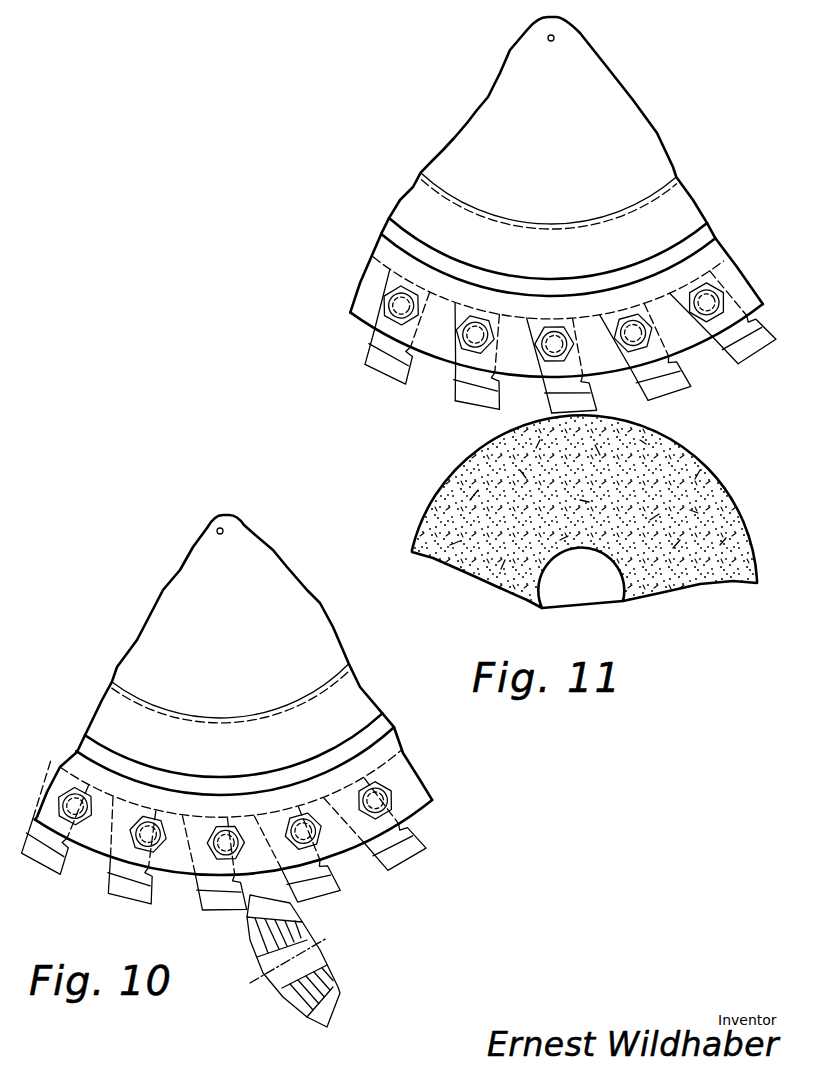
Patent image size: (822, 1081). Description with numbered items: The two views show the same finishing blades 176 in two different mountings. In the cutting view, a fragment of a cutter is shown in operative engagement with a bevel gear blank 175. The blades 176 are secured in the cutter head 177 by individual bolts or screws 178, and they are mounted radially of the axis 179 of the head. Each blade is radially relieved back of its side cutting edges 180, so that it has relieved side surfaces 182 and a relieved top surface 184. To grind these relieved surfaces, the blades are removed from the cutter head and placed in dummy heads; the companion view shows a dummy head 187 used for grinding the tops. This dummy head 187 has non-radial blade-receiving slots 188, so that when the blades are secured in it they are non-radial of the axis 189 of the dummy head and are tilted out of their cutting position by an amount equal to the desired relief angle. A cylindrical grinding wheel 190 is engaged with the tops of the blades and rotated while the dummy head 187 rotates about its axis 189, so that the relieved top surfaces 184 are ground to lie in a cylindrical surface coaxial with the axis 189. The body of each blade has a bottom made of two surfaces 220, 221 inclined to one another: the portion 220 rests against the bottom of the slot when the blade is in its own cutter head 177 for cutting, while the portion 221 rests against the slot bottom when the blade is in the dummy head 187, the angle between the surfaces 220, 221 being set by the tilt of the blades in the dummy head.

In FIG. 10, the bevel gear blank 175 is at (293, 1003).
In FIG. 11, the blades 176 is at (755, 340).
In FIG. 10, the blades 176 is at (332, 888).
In FIG. 10, the cutter head 177 is at (308, 610).
In FIG. 10, the bolts or screws 178 is at (362, 818).
In FIG. 10, the axis 179 is at (222, 534).
In FIG. 10, the side cutting edges 180 is at (418, 859).
In FIG. 10, the relieved side surfaces 182 is at (418, 851).
In FIG. 11, the relieved top surfaces 184 is at (743, 362).
In FIG. 10, the relieved top surfaces 184 is at (418, 858).
In FIG. 11, the dummy head 187 is at (633, 125).
In FIG. 11, the blade-receiving slots 188 is at (497, 350).
In FIG. 11, the axis 189 is at (553, 41).
In FIG. 11, the grinding wheel 190 is at (733, 513).
In FIG. 10, the bottom surface portion 220 is at (288, 805).
In FIG. 10, the bottom surface portion 221 is at (312, 805).